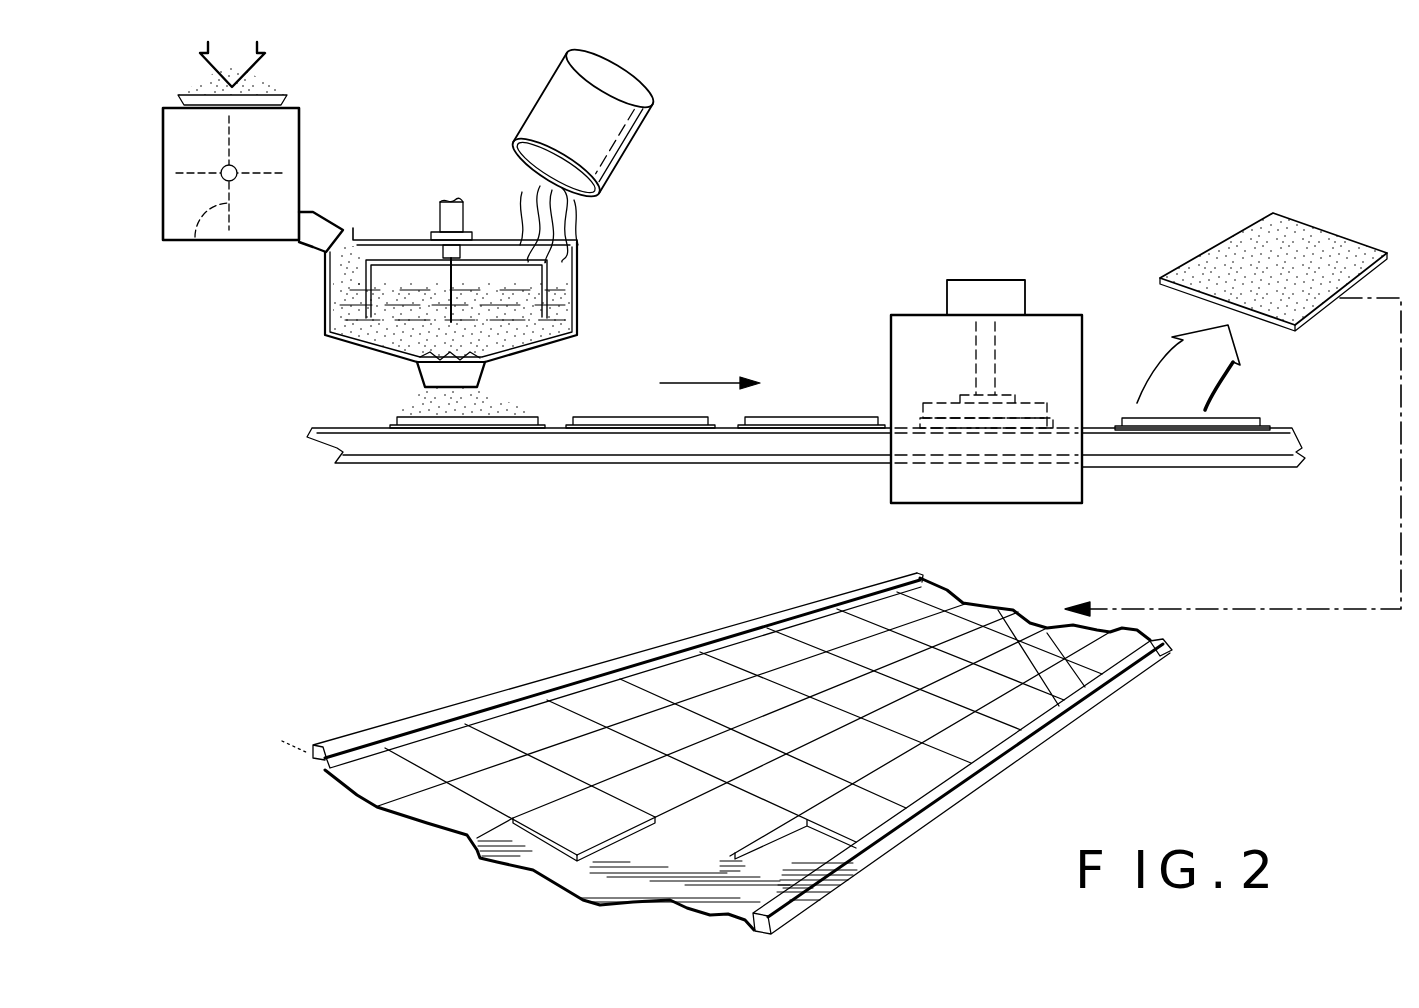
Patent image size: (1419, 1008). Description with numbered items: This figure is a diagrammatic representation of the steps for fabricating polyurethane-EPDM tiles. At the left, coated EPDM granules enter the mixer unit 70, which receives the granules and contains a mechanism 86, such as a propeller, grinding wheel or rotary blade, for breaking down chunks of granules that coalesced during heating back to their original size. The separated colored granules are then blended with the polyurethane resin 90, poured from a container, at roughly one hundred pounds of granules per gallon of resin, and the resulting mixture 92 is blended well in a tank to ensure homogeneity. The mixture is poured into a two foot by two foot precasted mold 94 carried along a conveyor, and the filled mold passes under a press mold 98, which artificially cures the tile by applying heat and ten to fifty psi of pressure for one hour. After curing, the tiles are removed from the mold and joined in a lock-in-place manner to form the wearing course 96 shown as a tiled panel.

The mixer unit 70 is at (266, 174).
The mechanism 86 is at (190, 240).
The polyurethane resin 90 is at (598, 184).
The mixture 92 is at (390, 327).
The precasted mold 94 is at (517, 420).
The wearing course 96 is at (776, 666).
The press mold 98 is at (988, 361).